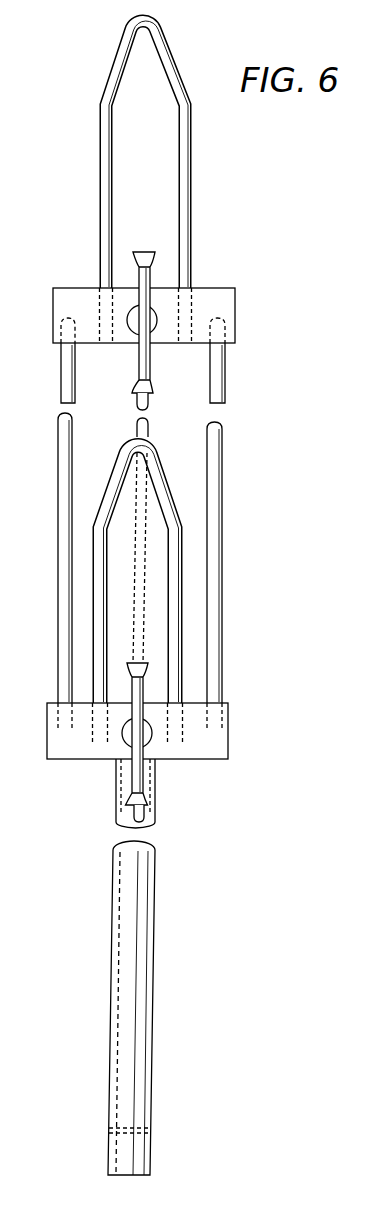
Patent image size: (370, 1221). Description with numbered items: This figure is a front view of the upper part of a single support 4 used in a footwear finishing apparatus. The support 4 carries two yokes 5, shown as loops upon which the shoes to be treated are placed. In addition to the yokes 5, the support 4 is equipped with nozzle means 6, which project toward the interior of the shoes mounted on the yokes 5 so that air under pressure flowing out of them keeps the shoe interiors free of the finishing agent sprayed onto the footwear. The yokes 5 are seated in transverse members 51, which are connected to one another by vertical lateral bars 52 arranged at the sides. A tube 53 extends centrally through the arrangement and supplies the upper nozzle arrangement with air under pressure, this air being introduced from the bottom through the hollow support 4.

The support 4 is at (135, 877).
The yoke 5 is at (182, 135).
The nozzle means 6 is at (144, 251).
The transverse member 51 is at (226, 306).
The vertical lateral bar 52 is at (66, 453).
The tube 53 is at (149, 426).